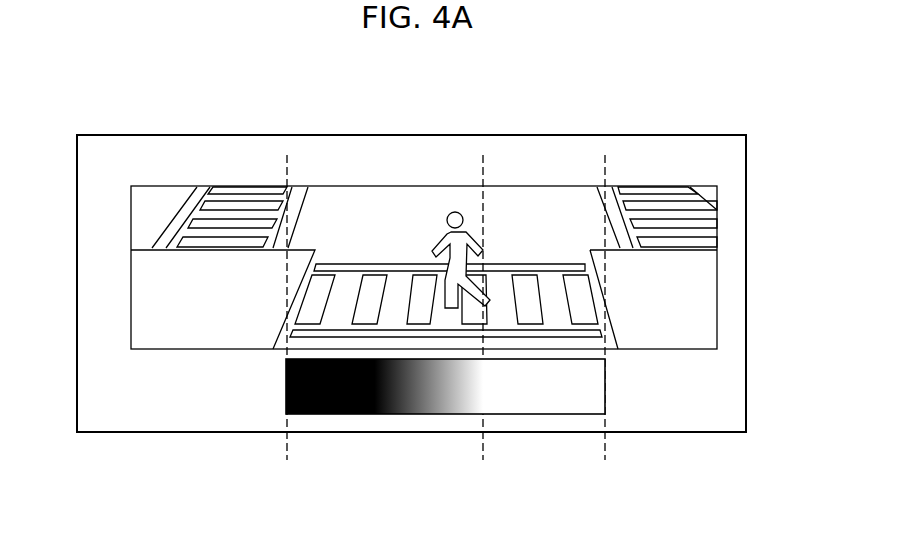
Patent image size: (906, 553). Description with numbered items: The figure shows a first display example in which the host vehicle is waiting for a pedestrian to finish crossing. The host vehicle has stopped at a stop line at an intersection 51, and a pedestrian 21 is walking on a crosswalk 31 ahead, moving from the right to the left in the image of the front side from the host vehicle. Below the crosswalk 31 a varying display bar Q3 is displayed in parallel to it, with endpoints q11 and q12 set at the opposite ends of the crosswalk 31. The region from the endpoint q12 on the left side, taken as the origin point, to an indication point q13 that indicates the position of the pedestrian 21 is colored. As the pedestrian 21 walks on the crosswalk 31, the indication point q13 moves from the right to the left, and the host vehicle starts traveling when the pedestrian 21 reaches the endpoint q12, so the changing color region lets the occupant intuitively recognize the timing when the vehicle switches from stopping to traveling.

The intersection 51 is at (388, 237).
The pedestrian 21 is at (470, 211).
The crosswalk 31 is at (349, 266).
The endpoint q12 is at (299, 323).
The indication point q13 is at (494, 323).
The endpoint q11 is at (609, 323).
The varying display bar Q3 is at (545, 414).